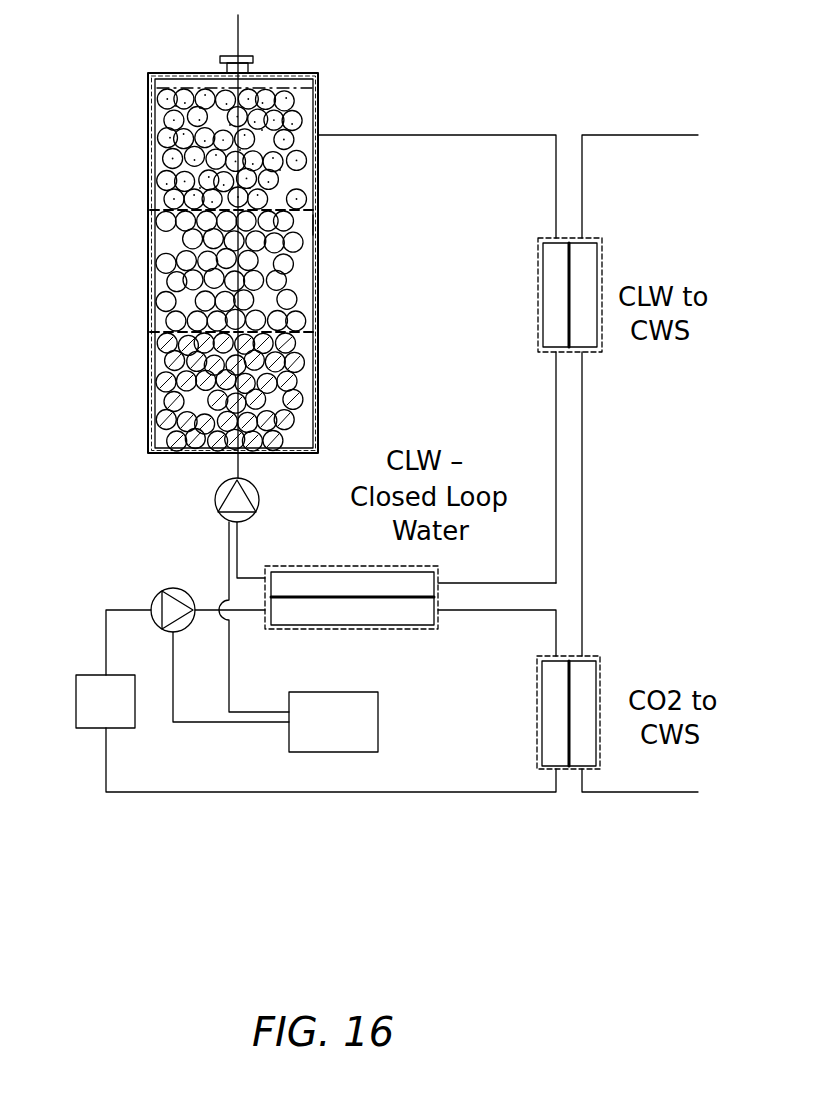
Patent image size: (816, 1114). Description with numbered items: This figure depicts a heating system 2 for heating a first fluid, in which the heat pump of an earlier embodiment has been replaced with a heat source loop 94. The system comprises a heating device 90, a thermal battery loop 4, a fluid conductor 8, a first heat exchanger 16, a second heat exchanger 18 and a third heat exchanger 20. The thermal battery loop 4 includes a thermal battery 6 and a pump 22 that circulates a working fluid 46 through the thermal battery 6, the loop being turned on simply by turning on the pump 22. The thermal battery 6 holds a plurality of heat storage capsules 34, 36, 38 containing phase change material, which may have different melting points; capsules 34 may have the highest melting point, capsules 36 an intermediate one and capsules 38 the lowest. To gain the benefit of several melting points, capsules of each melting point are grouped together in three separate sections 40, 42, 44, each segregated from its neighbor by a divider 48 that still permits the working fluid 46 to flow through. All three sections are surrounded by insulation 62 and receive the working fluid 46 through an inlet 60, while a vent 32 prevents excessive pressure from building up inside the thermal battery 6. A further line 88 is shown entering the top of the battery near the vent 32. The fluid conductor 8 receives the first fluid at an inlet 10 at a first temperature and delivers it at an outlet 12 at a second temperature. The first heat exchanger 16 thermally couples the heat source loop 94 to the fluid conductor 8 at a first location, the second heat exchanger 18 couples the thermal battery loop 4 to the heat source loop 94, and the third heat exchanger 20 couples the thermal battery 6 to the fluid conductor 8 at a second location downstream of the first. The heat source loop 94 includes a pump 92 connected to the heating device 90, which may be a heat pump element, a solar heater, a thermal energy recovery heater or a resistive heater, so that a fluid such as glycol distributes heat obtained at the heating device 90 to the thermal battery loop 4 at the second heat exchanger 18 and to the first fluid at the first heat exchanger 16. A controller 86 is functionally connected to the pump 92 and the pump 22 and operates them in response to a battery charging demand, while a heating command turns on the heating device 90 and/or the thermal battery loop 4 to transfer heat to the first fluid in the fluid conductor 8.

The heating system 2 is at (449, 886).
The thermal battery loop 4 is at (438, 137).
The thermal battery 6 is at (342, 352).
The fluid conductor 8 is at (583, 455).
The inlet 10 is at (627, 793).
The outlet 12 is at (650, 135).
The first heat exchanger 16 is at (537, 716).
The second heat exchanger 18 is at (297, 630).
The third heat exchanger 20 is at (538, 300).
The pump 22 is at (216, 498).
The vent 32 is at (232, 57).
The heat storage capsules 34 is at (318, 400).
The heat storage capsules 36 is at (318, 290).
The heat storage capsules 38 is at (317, 94).
The section 40 is at (147, 334).
The section 42 is at (147, 212).
The section 44 is at (147, 75).
The working fluid 46 is at (296, 80).
The divider 48 is at (312, 206).
The inlet 60 is at (240, 455).
The insulation 62 is at (318, 224).
The controller 86 is at (333, 722).
The inlet pipe 88 is at (244, 40).
The heating device 90 is at (105, 701).
The pump 92 is at (196, 592).
The heat source loop 94 is at (195, 799).